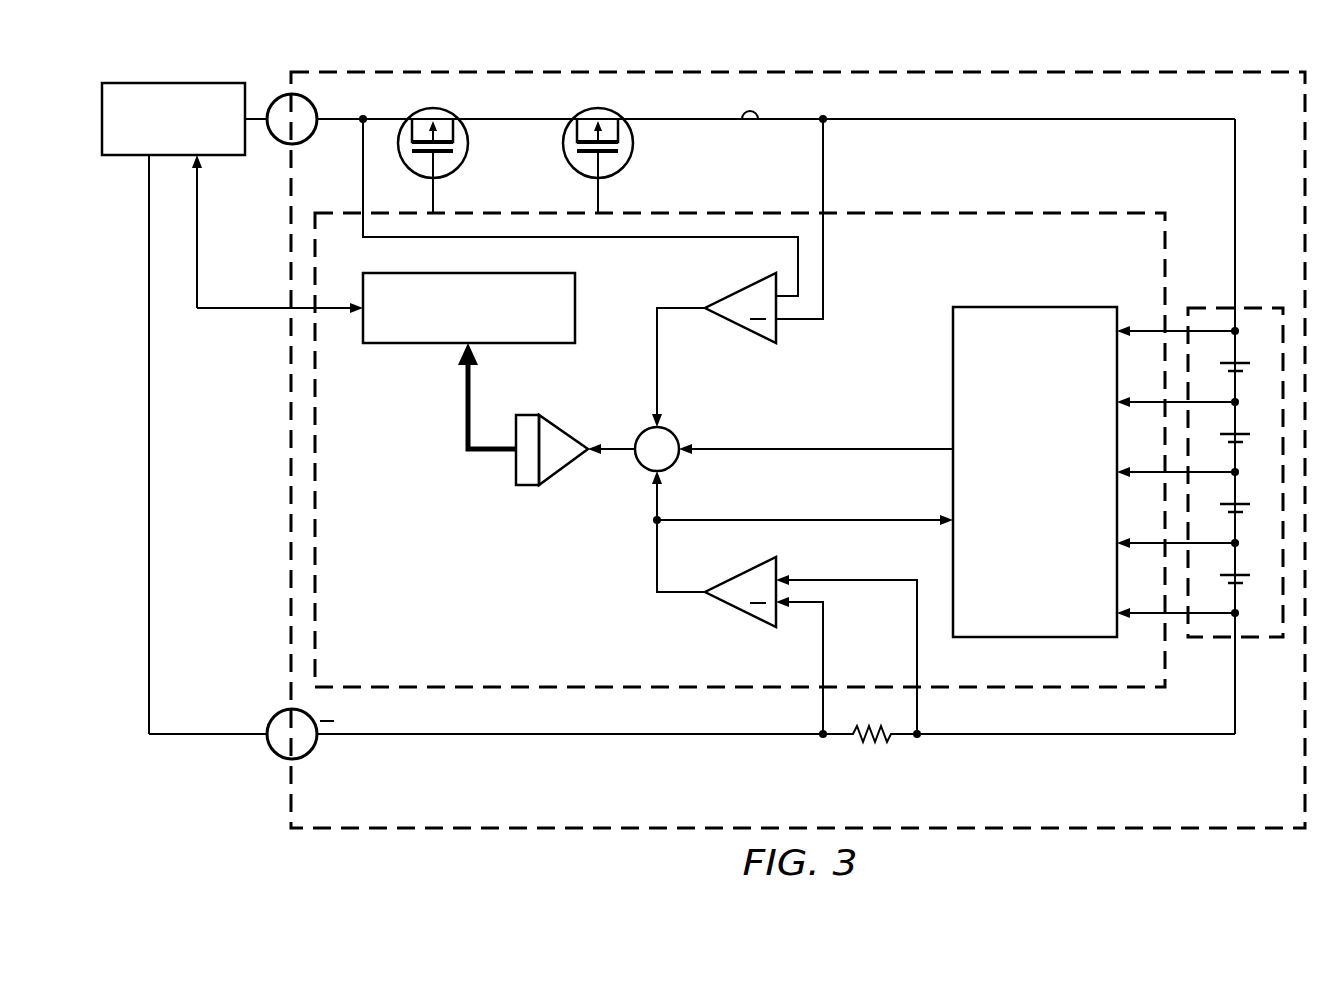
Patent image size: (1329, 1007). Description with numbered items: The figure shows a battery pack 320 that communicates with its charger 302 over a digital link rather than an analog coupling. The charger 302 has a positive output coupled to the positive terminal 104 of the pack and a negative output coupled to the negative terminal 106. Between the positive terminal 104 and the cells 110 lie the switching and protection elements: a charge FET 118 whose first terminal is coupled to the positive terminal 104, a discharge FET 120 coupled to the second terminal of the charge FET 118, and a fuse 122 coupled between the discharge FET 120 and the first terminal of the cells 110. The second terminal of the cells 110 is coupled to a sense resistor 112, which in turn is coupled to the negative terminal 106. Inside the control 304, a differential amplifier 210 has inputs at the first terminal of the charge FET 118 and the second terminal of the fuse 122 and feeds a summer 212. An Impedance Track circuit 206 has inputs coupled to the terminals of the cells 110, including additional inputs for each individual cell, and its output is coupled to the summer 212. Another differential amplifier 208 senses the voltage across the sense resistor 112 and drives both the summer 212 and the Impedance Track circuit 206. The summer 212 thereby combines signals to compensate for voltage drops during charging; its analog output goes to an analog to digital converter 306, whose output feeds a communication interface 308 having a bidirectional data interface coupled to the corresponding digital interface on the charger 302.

The charger 302 is at (170, 83).
The positive terminal 104 is at (282, 94).
The negative terminal 106 is at (272, 748).
The charge FET 118 is at (468, 143).
The discharge FET 120 is at (633, 143).
The fuse 122 is at (758, 119).
The cells 110 is at (1259, 299).
The sense resistor 112 is at (868, 740).
The Impedance Track circuit 206 is at (1014, 525).
The differential amplifier 208 is at (740, 612).
The differential amplifier 210 is at (740, 328).
The summer 212 is at (638, 436).
The control 304 is at (460, 627).
The analog to digital converter 306 is at (530, 412).
The communication interface 308 is at (409, 346).
The battery pack 320 is at (1083, 794).